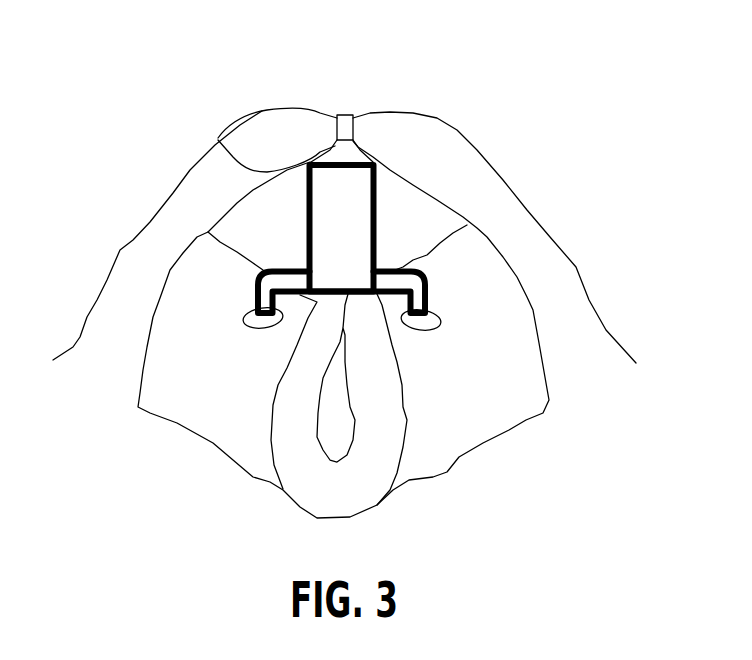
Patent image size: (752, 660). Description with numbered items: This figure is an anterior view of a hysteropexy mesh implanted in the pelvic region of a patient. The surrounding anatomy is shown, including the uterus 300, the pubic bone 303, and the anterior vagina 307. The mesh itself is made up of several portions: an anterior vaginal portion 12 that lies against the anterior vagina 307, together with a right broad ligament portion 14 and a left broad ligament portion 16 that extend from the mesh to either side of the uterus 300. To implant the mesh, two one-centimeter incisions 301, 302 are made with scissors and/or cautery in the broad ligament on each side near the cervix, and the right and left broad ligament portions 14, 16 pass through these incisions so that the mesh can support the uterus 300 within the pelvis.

The anterior vaginal portion 12 is at (225, 140).
The right broad ligament portion 14 is at (519, 257).
The left broad ligament portion 16 is at (139, 269).
The uterus 300 is at (414, 423).
The incision 301 is at (518, 421).
The incision 302 is at (189, 430).
The pubic bone 303 is at (365, 96).
The anterior vagina 307 is at (219, 226).